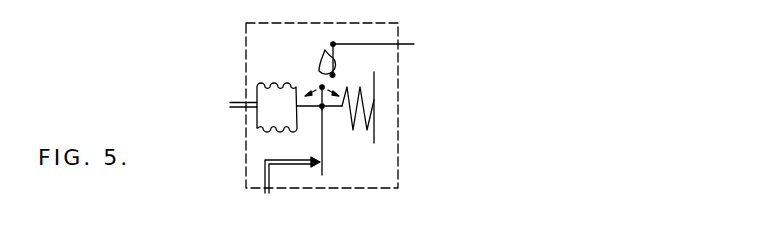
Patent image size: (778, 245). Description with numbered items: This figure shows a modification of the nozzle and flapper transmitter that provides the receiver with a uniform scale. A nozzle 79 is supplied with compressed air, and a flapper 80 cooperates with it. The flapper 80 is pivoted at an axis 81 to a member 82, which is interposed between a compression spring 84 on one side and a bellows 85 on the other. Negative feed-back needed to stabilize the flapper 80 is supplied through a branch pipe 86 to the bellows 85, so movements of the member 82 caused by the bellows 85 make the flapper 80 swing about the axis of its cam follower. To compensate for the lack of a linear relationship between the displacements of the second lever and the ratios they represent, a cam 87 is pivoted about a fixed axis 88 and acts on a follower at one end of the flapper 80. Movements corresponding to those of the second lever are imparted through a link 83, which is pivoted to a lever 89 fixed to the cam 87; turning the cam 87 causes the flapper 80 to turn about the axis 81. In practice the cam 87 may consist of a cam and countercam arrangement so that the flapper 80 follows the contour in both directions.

The nozzle 79 is at (310, 168).
The flapper 80 is at (322, 167).
The pivot 81 is at (323, 107).
The member 82 is at (308, 110).
The link 83 is at (414, 44).
The compression spring 84 is at (368, 133).
The bellows 85 is at (270, 108).
The branch pipe 86 is at (242, 103).
The cam 87 is at (318, 57).
The fixed axis 88 is at (334, 74).
The lever 89 is at (378, 44).